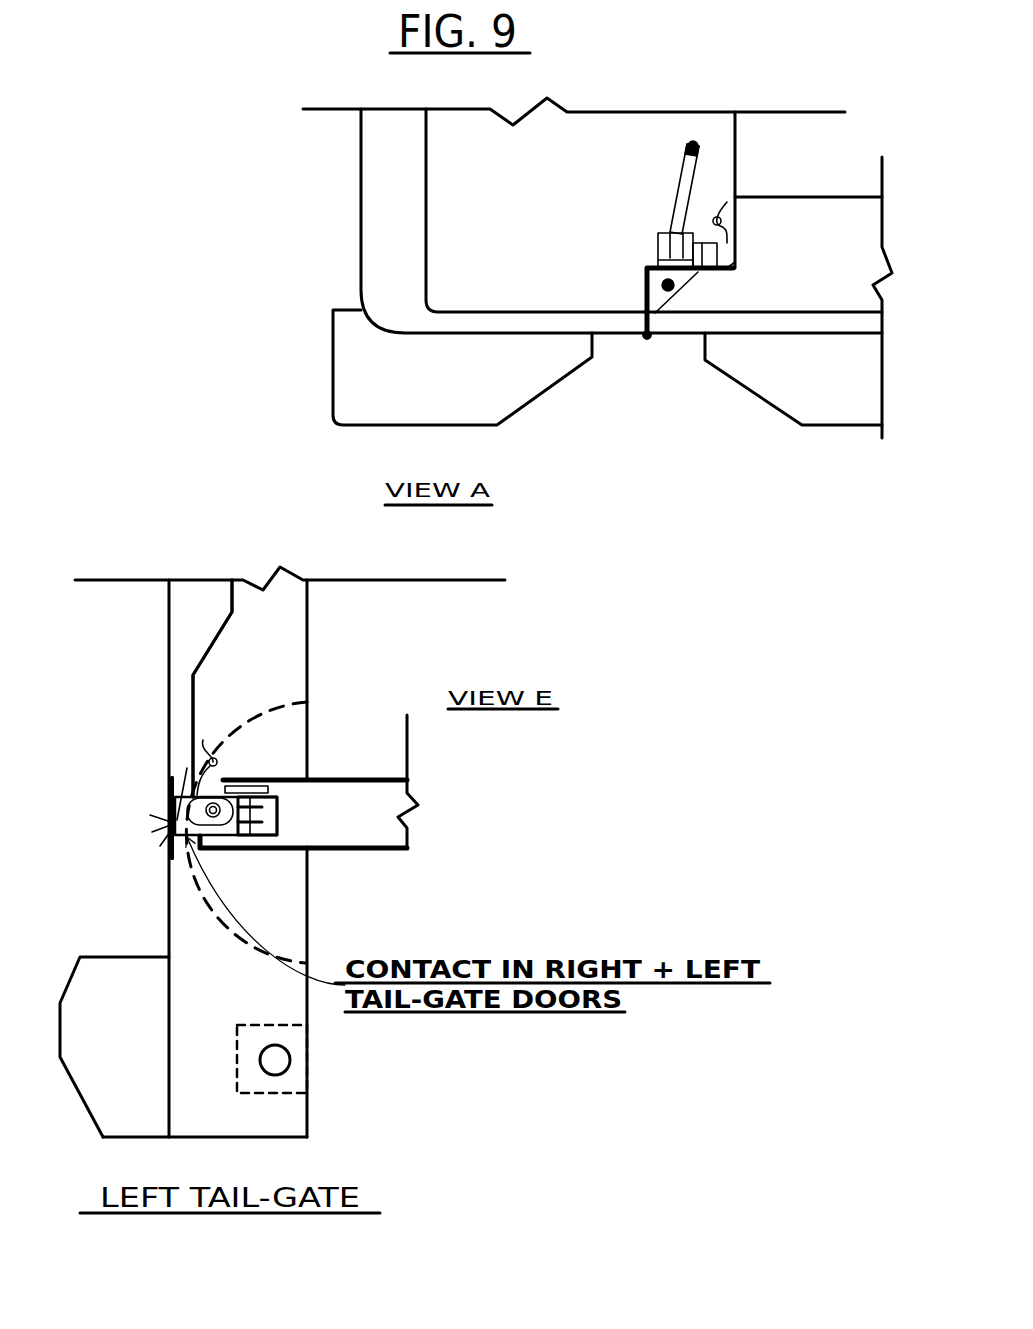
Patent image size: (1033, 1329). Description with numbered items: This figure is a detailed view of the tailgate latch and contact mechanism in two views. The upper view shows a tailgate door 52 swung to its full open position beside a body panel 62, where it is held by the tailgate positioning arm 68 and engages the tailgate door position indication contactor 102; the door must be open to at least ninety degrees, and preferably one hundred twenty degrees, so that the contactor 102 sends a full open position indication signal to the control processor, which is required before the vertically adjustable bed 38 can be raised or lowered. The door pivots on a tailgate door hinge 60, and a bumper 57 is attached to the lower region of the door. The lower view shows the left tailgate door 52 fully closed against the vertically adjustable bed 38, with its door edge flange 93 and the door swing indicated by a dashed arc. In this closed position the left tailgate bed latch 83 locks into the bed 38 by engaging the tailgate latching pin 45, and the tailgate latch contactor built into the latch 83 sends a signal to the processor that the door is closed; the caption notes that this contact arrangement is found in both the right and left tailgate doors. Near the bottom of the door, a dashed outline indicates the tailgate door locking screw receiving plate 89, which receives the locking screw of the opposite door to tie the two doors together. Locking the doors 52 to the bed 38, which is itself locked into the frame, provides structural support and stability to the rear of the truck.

The vertically adjustable bed 38 is at (377, 777).
The right tailgate latching pin 45 is at (267, 808).
The left tailgate door 52 is at (770, 192).
The bumper 57 is at (320, 373).
The tailgate door hinge 60 is at (648, 342).
The body panel 62 is at (357, 217).
The tailgate positioning arm 68 is at (670, 202).
The left tailgate bed latch 83 is at (165, 820).
The right tailgate door locking screw receiving plate 89 is at (312, 1040).
The door edge flange 93 is at (197, 677).
The tailgate door position indication contactor 102 is at (703, 272).